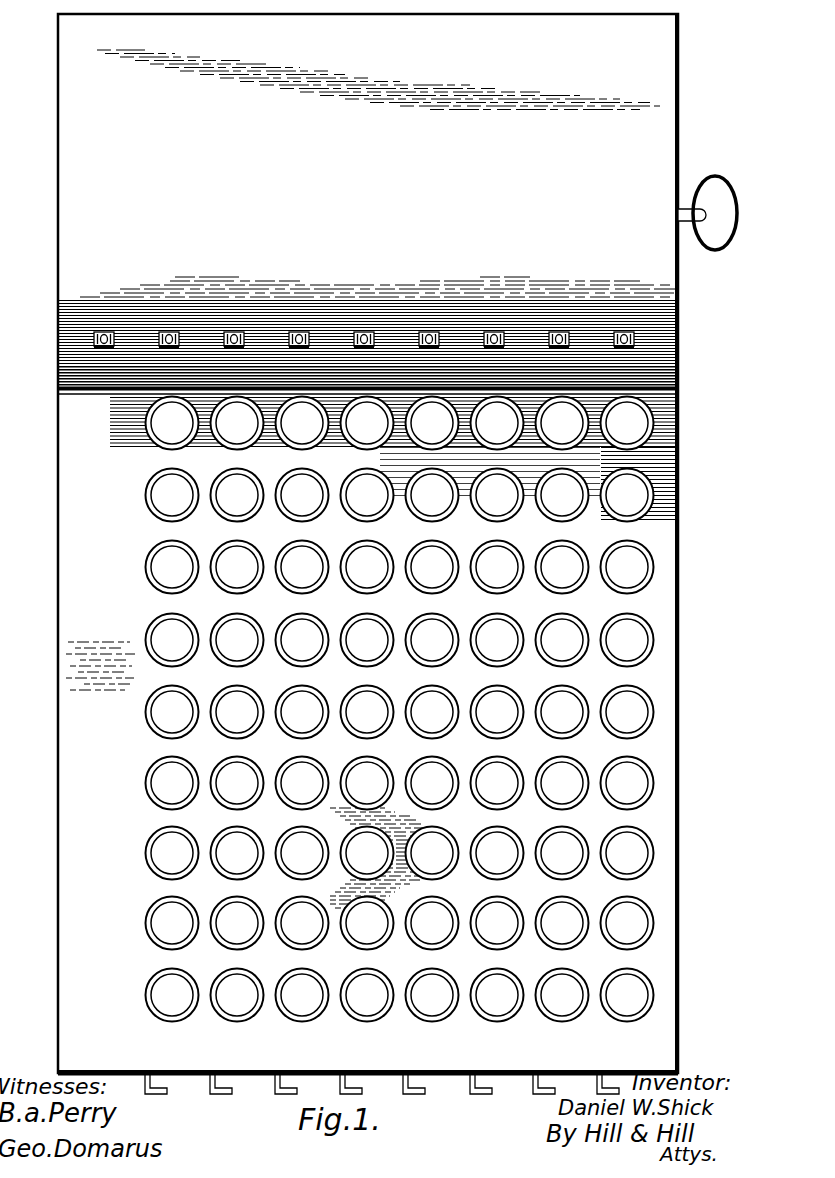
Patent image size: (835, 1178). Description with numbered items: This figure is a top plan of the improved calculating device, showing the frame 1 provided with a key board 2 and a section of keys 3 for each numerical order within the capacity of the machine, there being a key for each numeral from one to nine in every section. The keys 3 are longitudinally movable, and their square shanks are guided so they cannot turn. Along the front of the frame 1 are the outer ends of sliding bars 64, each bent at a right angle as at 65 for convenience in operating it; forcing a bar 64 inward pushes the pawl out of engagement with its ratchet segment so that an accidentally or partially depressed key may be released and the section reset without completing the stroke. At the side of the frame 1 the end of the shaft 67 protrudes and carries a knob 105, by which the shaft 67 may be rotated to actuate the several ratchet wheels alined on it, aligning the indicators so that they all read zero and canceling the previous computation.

The frame 1 is at (62, 158).
The key board 2 is at (267, 714).
The keys 3 is at (400, 709).
The sliding bar 64 is at (470, 1084).
The bent end of sliding bar 65 is at (222, 1094).
The shaft 67 is at (690, 212).
The knob 105 is at (712, 250).